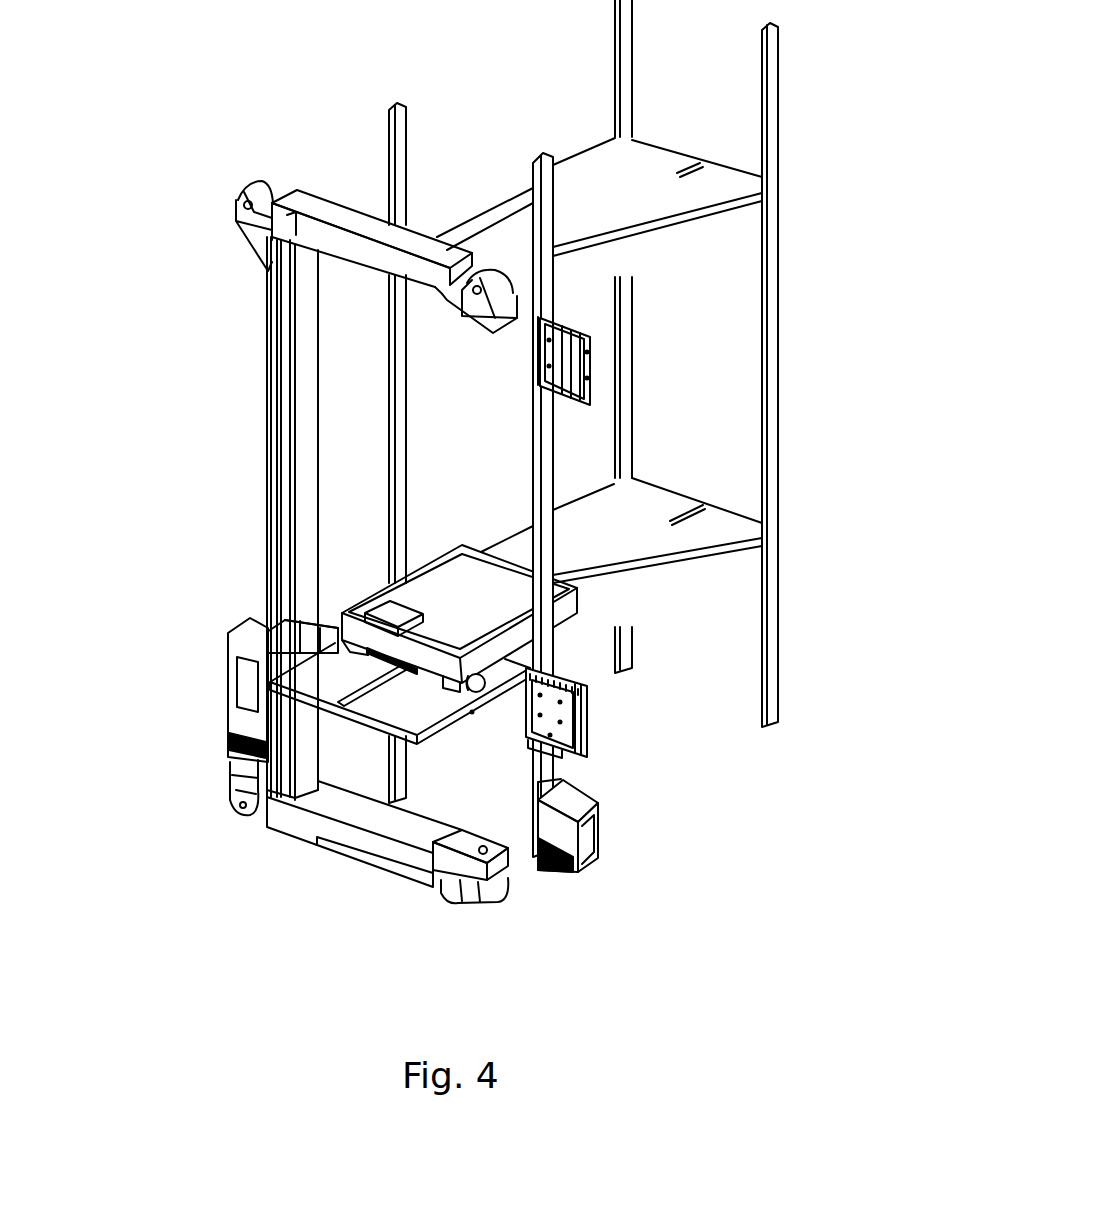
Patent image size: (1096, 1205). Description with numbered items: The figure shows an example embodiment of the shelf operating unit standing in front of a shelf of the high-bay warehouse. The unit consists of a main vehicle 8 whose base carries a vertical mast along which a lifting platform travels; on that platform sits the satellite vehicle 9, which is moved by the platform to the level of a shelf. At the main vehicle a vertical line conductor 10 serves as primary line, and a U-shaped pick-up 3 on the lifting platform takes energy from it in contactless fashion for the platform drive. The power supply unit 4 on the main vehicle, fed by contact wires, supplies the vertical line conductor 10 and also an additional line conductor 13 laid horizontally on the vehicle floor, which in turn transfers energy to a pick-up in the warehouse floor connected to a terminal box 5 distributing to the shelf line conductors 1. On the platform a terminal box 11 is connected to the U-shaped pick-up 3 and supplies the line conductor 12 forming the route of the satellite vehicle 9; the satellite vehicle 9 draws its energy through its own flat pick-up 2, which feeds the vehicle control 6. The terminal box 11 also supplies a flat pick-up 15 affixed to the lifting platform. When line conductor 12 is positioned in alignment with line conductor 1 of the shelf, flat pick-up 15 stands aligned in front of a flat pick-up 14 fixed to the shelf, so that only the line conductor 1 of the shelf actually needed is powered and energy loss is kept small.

The line conductor for side aisle 1 is at (702, 160).
The flat pick-up 2 is at (397, 663).
The U-shaped pick-up 3 is at (287, 643).
The power supply unit 4 is at (235, 718).
The terminal box 5 is at (587, 832).
The vehicle control 6 is at (383, 613).
The main vehicle 8 is at (278, 822).
The satellite vehicle 9 is at (573, 752).
The main vehicle line conductor, vertical 10 is at (280, 607).
The terminal box 11 is at (318, 633).
The line conductor, lifting platform 12 is at (375, 690).
The line conductor horizontally laid out on the vehicle floor 13 is at (338, 853).
The flat pick-up 14 is at (595, 342).
The flat pick-up 15 is at (553, 708).